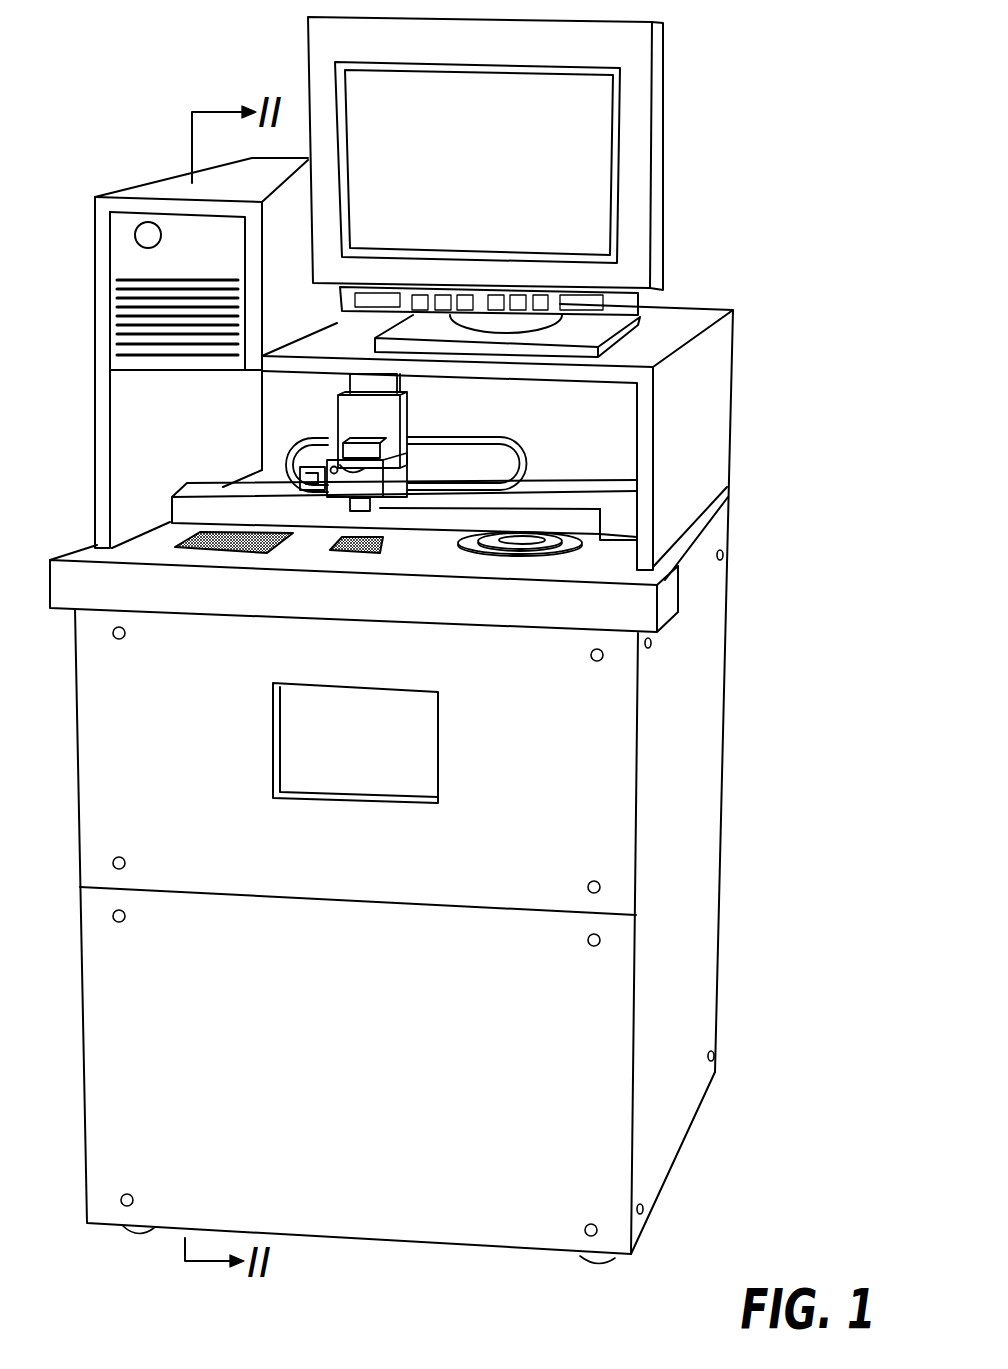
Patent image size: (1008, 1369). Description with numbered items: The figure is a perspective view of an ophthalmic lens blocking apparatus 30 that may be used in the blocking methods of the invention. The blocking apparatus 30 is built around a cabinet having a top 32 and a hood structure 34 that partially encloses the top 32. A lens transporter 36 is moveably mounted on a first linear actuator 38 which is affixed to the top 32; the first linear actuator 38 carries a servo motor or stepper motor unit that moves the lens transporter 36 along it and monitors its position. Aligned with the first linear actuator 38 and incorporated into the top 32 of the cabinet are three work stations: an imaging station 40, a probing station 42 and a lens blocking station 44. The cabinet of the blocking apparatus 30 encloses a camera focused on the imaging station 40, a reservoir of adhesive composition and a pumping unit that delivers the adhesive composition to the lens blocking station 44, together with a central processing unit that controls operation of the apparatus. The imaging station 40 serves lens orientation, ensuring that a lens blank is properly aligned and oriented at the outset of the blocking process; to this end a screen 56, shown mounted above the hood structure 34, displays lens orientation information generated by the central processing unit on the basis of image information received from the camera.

The blocking apparatus 30 is at (747, 780).
The top 32 is at (593, 563).
The hood structure 34 is at (707, 445).
The lens transporter 36 is at (350, 416).
The first linear actuator 38 is at (190, 512).
The imaging station 40 is at (202, 552).
The probing station 42 is at (330, 548).
The lens blocking station 44 is at (450, 560).
The screen 56 is at (660, 157).